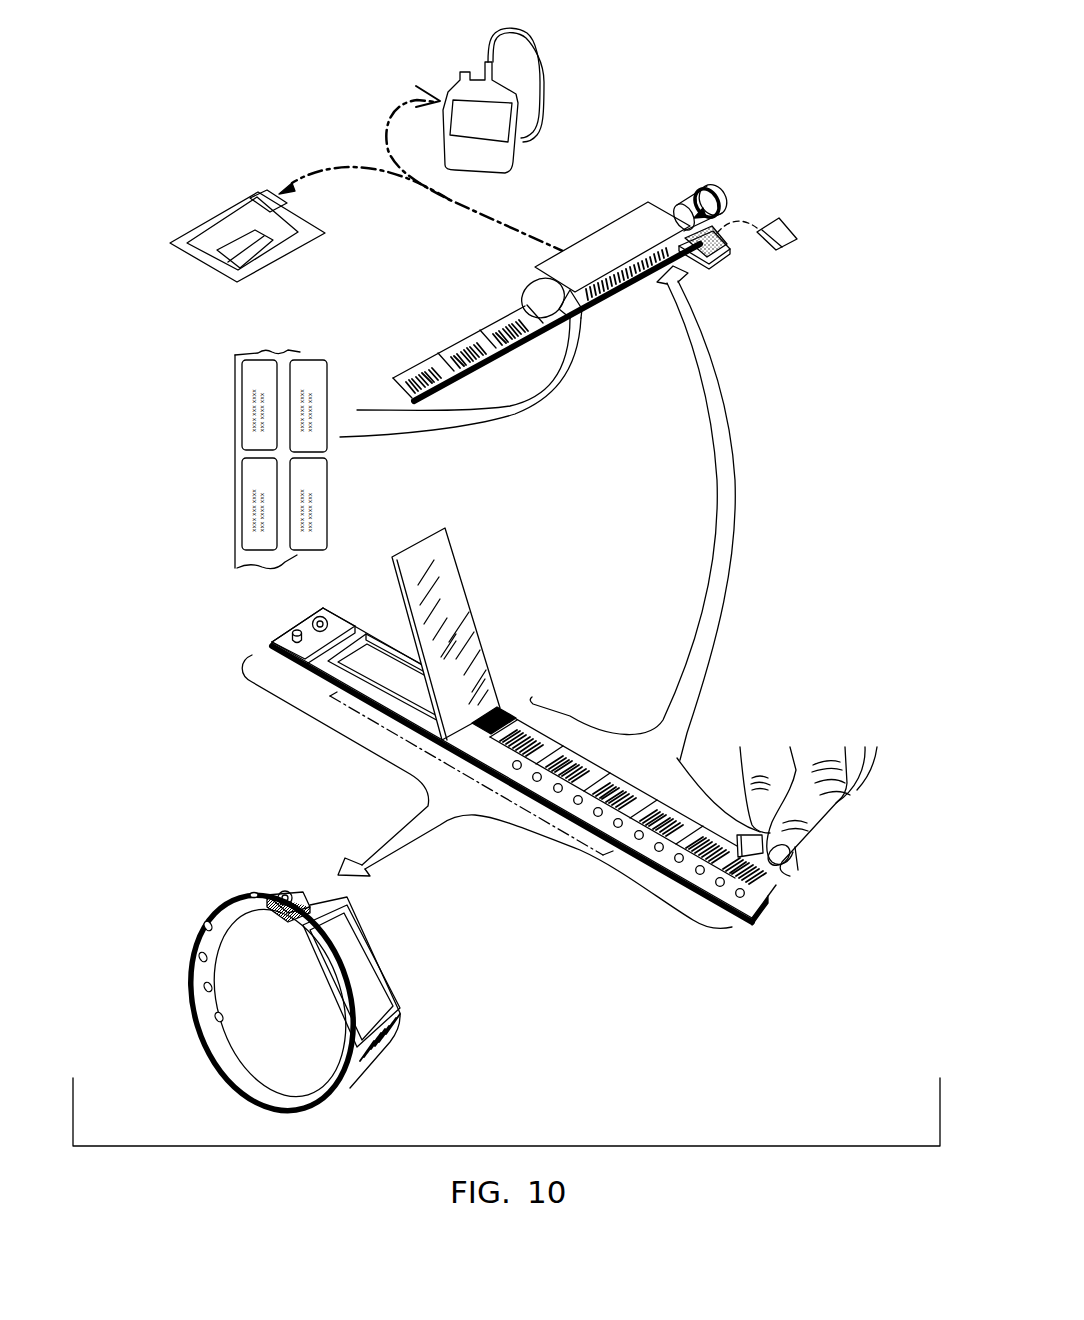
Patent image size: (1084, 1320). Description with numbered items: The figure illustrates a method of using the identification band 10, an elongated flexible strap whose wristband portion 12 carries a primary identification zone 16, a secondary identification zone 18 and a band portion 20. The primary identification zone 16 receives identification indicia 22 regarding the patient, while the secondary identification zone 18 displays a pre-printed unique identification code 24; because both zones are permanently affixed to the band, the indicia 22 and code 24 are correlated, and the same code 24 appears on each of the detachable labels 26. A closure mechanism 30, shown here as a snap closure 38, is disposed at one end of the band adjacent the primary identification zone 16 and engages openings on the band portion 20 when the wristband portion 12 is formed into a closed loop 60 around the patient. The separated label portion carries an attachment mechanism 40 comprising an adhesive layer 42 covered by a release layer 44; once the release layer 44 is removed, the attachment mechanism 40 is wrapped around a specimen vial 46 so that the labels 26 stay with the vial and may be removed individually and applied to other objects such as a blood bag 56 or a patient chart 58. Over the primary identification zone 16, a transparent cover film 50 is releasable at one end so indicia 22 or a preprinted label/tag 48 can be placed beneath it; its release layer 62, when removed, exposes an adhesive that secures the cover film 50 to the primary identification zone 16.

The identification band 10 is at (563, 583).
The wristband portion 12 is at (213, 872).
The primary identification zone 16 is at (328, 662).
The secondary identification zone 18 is at (463, 738).
The band portion 20 is at (677, 875).
The identification indicia 22 is at (373, 652).
The unique identification code 24 is at (499, 708).
The detachable labels 26 is at (662, 803).
The closure mechanism 30 is at (302, 620).
The snap closure 38 is at (292, 634).
The attachment mechanism 40 is at (697, 258).
The adhesive layer 42 is at (722, 252).
The release layer 44 is at (797, 223).
The specimen vial 46 is at (700, 209).
The preprinted label/tag 48 is at (347, 662).
The transparent cover film 50 is at (455, 562).
The blood bag 56 is at (512, 162).
The patient chart 58 is at (217, 219).
The closed loop 60 is at (168, 1008).
The release layer 62 is at (397, 581).